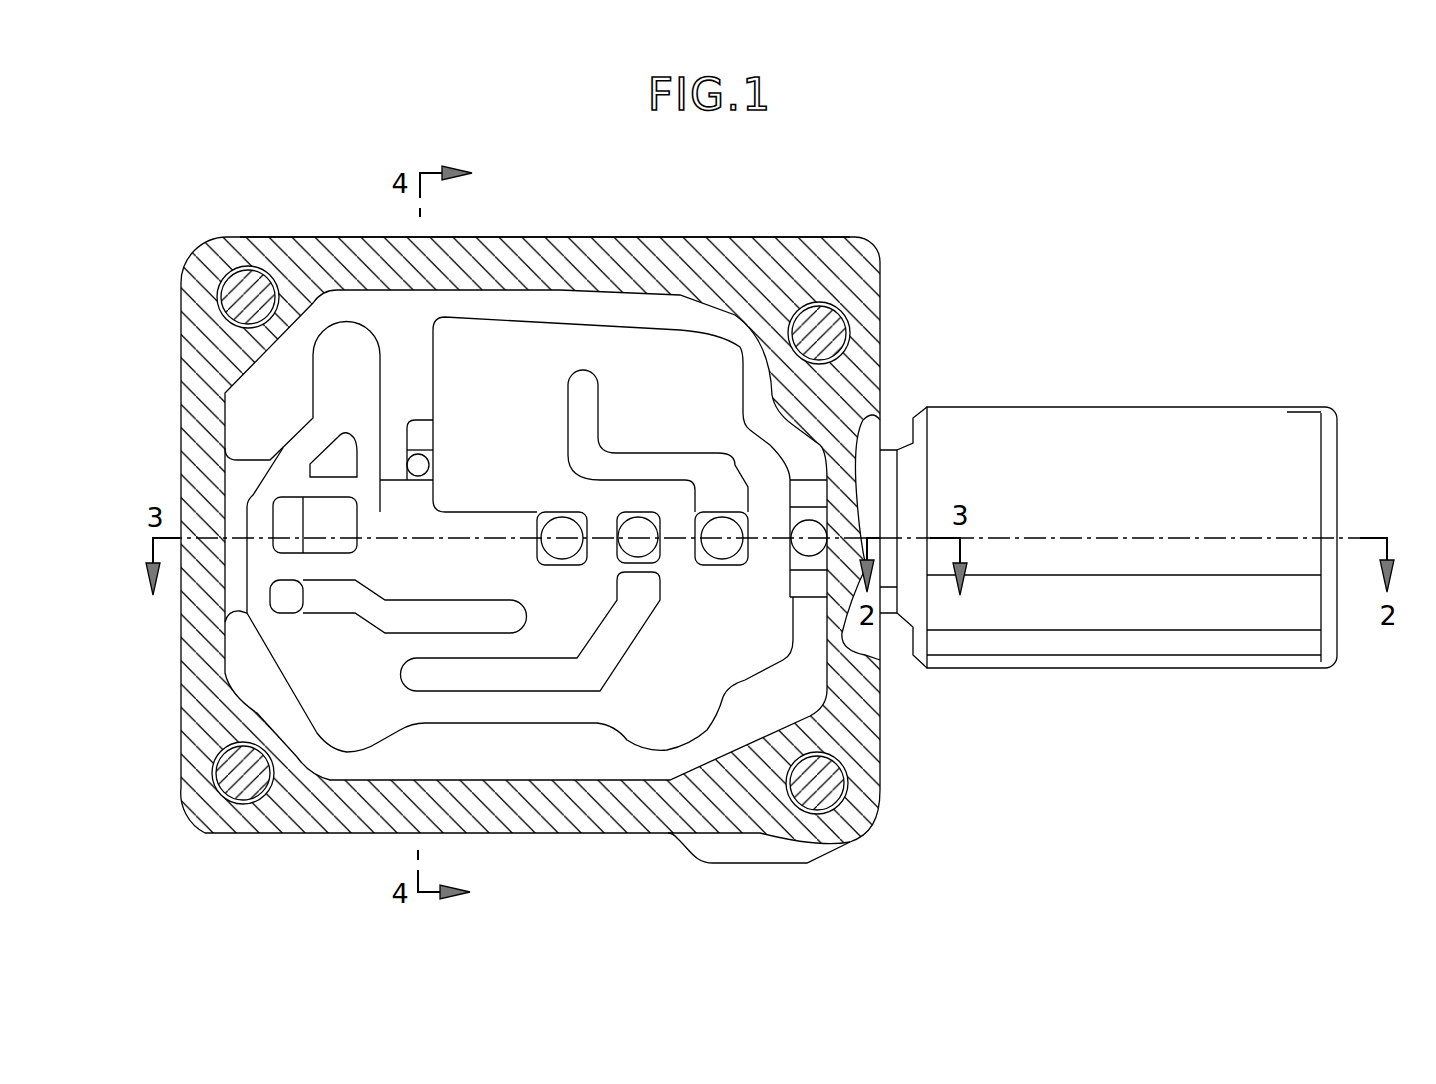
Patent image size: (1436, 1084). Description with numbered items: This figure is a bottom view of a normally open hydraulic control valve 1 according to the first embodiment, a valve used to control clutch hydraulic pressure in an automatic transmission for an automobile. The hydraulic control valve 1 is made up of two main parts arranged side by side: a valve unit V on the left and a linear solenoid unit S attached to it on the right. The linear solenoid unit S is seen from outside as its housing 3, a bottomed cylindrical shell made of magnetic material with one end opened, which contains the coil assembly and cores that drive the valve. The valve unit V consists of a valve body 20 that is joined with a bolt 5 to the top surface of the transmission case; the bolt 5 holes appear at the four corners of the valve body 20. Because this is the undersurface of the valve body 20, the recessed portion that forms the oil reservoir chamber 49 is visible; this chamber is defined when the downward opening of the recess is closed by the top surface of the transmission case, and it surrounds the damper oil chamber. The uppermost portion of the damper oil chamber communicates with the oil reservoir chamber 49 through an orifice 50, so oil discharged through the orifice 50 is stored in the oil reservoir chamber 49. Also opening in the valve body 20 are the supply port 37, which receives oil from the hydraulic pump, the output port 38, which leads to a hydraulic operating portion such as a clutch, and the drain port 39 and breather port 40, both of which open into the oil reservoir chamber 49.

The hydraulic control valve 1 is at (972, 322).
The valve unit V is at (634, 230).
The linear solenoid unit S is at (1082, 400).
The housing 3 is at (1143, 640).
The bolt 5 is at (258, 300).
The valve body 20 is at (530, 240).
The oil reservoir chamber 49 is at (415, 367).
The orifice 50 is at (417, 447).
The supply port 37 is at (722, 532).
The output port 38 is at (640, 525).
The drain port 39 is at (582, 546).
The breather port 40 is at (802, 542).